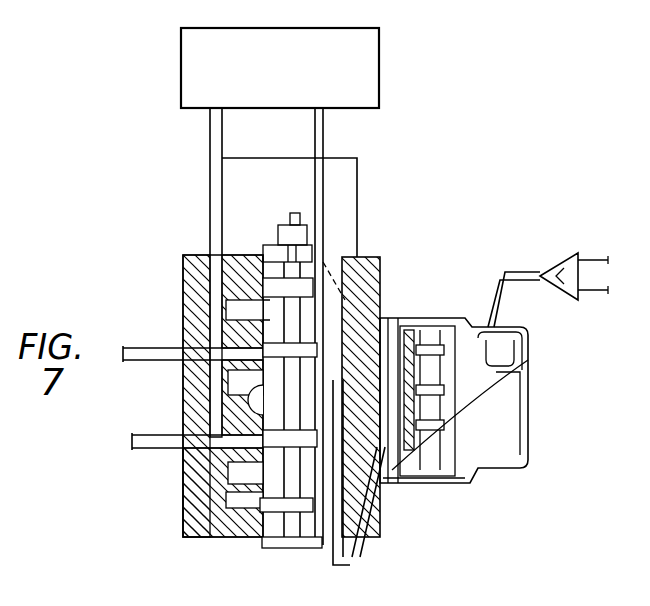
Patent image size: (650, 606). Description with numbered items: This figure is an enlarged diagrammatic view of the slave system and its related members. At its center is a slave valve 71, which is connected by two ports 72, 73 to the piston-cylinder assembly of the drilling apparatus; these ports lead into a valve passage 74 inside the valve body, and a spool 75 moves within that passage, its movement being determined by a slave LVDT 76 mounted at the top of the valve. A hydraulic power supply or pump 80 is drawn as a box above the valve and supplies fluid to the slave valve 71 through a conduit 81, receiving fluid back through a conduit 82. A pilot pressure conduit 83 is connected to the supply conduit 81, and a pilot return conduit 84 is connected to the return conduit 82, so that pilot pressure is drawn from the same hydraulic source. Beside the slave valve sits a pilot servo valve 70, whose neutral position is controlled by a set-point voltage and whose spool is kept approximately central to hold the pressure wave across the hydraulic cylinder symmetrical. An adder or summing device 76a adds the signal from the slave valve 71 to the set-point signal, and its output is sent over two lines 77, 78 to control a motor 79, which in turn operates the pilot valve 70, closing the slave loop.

The pilot servo valve 70 is at (455, 318).
The slave valve 71 is at (207, 498).
The port 72 is at (185, 354).
The port 73 is at (187, 440).
The valve passage 74 is at (272, 300).
The spool 75 is at (288, 353).
The slave LVDT 76 is at (295, 212).
The adder or summing device 76a is at (566, 255).
The line 77 is at (500, 277).
The line 78 is at (528, 282).
The motor 79 is at (520, 428).
The hydraulic power supply or pump 80 is at (379, 48).
The conduit 81 is at (323, 128).
The conduit 82 is at (210, 182).
The pilot pressure conduit 83 is at (345, 556).
The pilot return conduit 84 is at (292, 158).